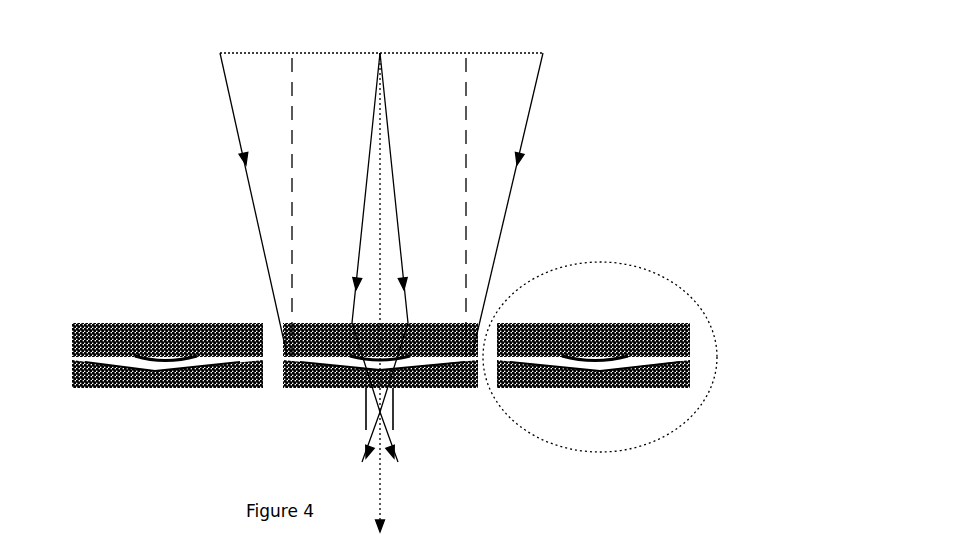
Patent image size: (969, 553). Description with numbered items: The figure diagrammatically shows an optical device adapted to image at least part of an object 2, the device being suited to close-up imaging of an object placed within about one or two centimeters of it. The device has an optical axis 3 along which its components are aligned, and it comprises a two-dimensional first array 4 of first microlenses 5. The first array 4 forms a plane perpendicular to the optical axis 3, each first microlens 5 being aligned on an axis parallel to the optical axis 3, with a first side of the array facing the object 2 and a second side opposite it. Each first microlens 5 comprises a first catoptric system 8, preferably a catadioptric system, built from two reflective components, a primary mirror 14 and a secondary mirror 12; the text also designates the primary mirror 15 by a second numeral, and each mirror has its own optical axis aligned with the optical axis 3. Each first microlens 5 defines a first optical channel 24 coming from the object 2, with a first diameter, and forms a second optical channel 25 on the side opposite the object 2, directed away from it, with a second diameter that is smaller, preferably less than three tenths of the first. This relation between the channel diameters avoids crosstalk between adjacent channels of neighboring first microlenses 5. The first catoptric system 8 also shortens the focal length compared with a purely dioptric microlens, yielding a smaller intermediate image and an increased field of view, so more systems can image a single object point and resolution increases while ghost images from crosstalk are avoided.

The object 2 is at (510, 53).
The optical axis 3 is at (385, 490).
The first array 4 is at (62, 323).
The first microlens 5 is at (640, 446).
The first catoptric system 8 is at (540, 378).
The secondary mirror 12 is at (372, 353).
The primary mirror 14 is at (428, 368).
The primary mirror 15 is at (595, 369).
The first optical channel 24 is at (292, 94).
The second optical channel 25 is at (365, 425).